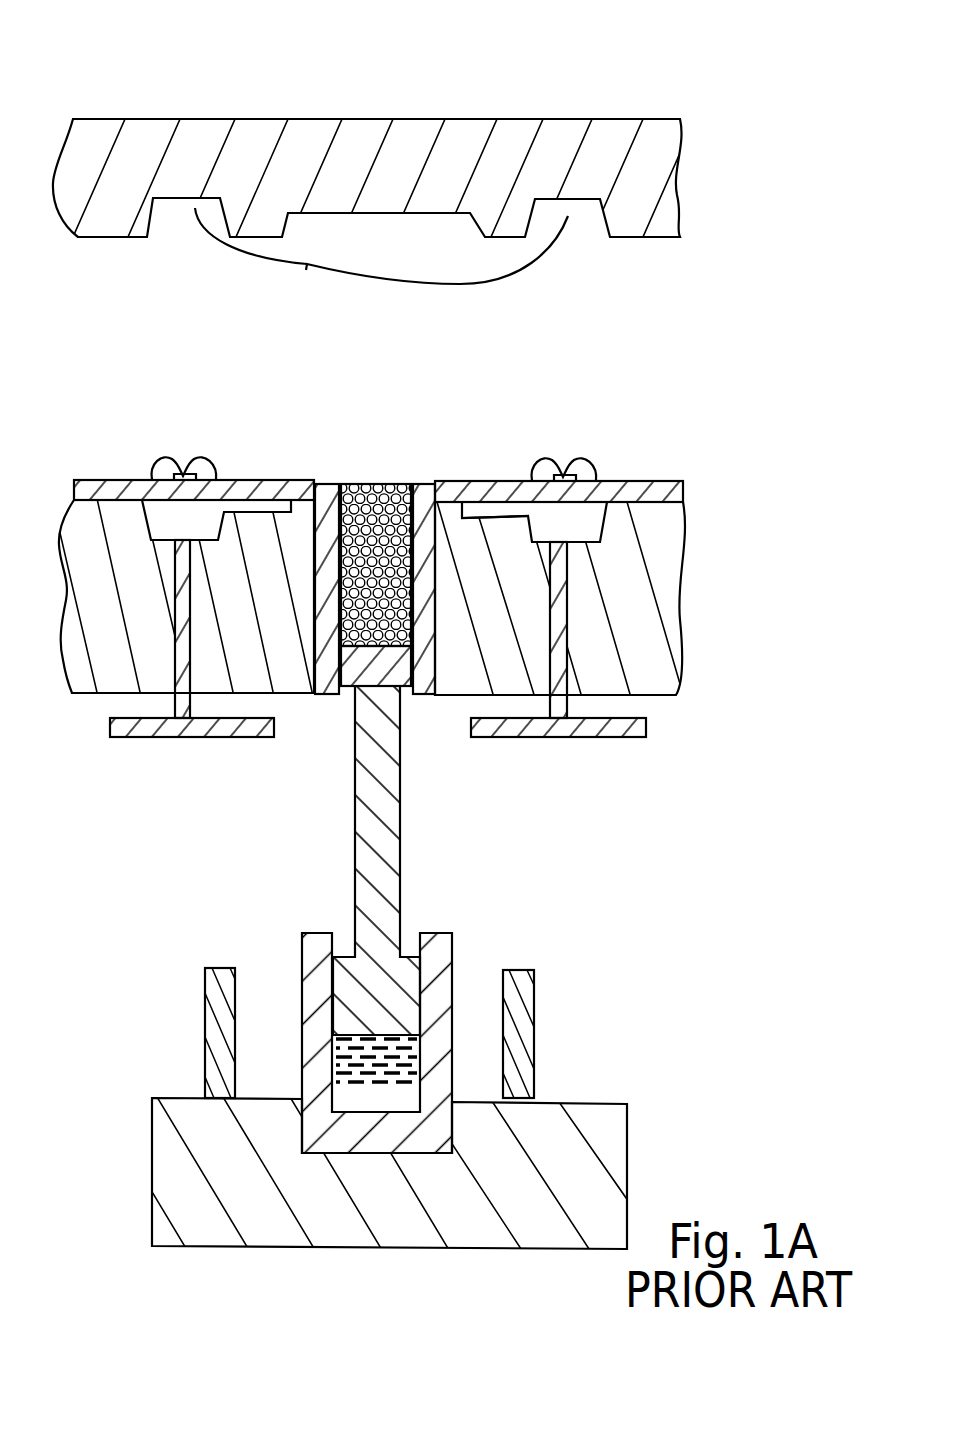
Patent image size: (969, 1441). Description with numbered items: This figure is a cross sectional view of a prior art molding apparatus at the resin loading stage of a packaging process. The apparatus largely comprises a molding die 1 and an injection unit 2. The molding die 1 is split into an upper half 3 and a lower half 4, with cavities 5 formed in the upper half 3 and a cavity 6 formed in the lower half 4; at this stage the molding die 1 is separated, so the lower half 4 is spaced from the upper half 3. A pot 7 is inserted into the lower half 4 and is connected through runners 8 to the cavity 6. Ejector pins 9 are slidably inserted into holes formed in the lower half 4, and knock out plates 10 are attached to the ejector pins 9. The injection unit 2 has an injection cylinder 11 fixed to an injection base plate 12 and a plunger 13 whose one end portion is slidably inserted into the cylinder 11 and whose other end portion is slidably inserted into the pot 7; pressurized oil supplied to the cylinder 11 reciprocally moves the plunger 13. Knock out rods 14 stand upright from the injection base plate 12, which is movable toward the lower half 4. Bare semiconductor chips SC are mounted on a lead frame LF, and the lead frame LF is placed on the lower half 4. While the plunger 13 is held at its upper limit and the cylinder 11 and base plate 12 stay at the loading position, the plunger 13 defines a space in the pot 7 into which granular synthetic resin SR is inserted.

The molding die 1 is at (431, 160).
The injection unit 2 is at (367, 818).
The upper half 3 is at (660, 119).
The lower half 4 is at (60, 659).
The cavities 5 is at (381, 259).
The cavity 6 is at (188, 512).
The pot 7 is at (329, 484).
The runners 8 is at (272, 509).
The ejector pins 9 is at (195, 715).
The knock out plates 10 is at (127, 738).
The injection cylinder 11 is at (433, 933).
The injection base plate 12 is at (602, 1103).
The plunger 13 is at (352, 846).
The knock out rods 14 is at (214, 968).
The lead frame LF is at (120, 480).
The bare semiconductor chips SC is at (187, 475).
The granular synthetic resin SR is at (386, 484).